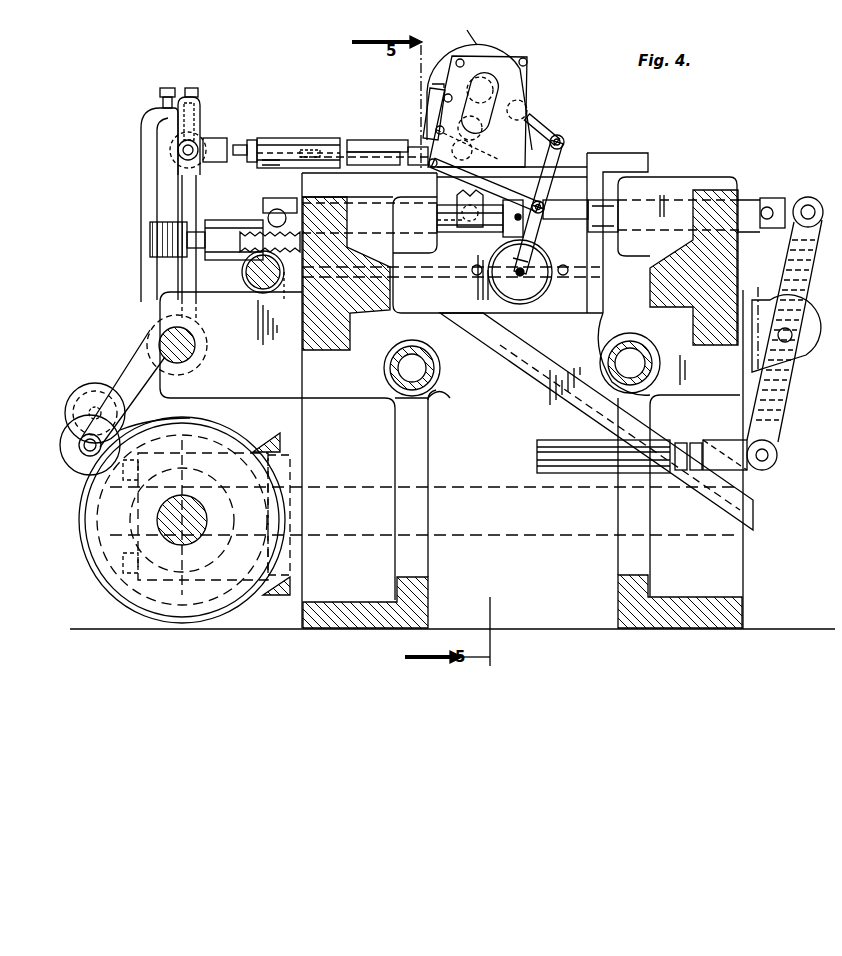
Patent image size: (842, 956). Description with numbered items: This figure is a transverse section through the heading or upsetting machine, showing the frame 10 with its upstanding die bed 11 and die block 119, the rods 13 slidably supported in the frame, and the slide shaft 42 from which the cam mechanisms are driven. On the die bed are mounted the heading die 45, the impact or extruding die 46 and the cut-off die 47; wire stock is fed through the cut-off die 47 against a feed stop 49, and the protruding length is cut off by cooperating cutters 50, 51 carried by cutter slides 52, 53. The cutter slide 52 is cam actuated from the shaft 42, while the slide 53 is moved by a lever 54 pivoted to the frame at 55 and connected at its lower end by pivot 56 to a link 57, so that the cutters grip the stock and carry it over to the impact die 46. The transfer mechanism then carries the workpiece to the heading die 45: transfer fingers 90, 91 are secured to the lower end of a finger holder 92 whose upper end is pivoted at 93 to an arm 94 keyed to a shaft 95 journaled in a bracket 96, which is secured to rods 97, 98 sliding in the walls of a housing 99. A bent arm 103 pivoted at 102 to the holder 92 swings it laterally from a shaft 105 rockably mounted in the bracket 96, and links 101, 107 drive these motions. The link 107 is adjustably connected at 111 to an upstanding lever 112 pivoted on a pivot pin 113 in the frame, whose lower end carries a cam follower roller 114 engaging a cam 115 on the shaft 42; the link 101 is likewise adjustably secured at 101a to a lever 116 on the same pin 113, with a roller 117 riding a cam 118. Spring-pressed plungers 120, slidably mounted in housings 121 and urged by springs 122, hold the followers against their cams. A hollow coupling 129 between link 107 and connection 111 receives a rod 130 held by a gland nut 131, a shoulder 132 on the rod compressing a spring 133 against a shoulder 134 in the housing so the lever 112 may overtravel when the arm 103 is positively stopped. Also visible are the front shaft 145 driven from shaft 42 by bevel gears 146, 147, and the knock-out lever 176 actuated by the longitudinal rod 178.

The frame 10 is at (372, 612).
The die bed 11 is at (332, 335).
The frame upper portion 119 is at (580, 292).
The rods 13 is at (420, 385).
The slide shaft 42 is at (190, 510).
The heading die 45 is at (522, 300).
The impact or extruding die 46 is at (516, 240).
The cut-off die 47 is at (437, 216).
The feed stop 49 is at (470, 205).
The cutter 50 is at (500, 208).
The cutter 51 is at (572, 215).
The cutter slide 52 is at (447, 232).
The cutter slide 53 is at (618, 214).
The lever 54 is at (795, 268).
The pivot 55 is at (792, 335).
The pivot 56 is at (764, 462).
The link 57 is at (537, 456).
The transfer finger 90 is at (512, 278).
The transfer finger 91 is at (540, 282).
The finger holder 92 is at (560, 160).
The pivot 93 is at (562, 138).
The arm 94 is at (548, 116).
The shaft 95 is at (505, 62).
The bracket 96 is at (520, 77).
The rod 97 is at (426, 100).
The rod 98 is at (528, 100).
The housing 99 is at (477, 45).
The link 101 is at (380, 150).
The adjustable connection 101a is at (178, 158).
The pivot 102 is at (545, 218).
The bent arm 103 is at (500, 178).
The shaft 105 is at (420, 135).
The link 107 is at (362, 140).
The adjustable connection 111 is at (196, 144).
The lever 112 is at (160, 197).
The pivot pin 113 is at (192, 338).
The cam follower roller 114 is at (62, 455).
The cam 115 is at (105, 503).
The lever 116 is at (141, 135).
The cam follower roller 117 is at (78, 405).
The cam 118 is at (150, 428).
The spring-pressed plunger 120 is at (206, 222).
The housing 121 is at (232, 232).
The spring 122 is at (245, 250).
The hollow coupling 129 is at (340, 186).
The rod 130 is at (252, 140).
The gland nut 131 is at (258, 140).
The shoulder 132 is at (268, 160).
The spring 133 is at (298, 140).
The shoulder 134 is at (316, 140).
The front shaft 145 is at (372, 487).
The bevel gear 146 is at (280, 433).
The bevel gear 147 is at (272, 596).
The lever 176 is at (282, 284).
The rod 178 is at (262, 292).